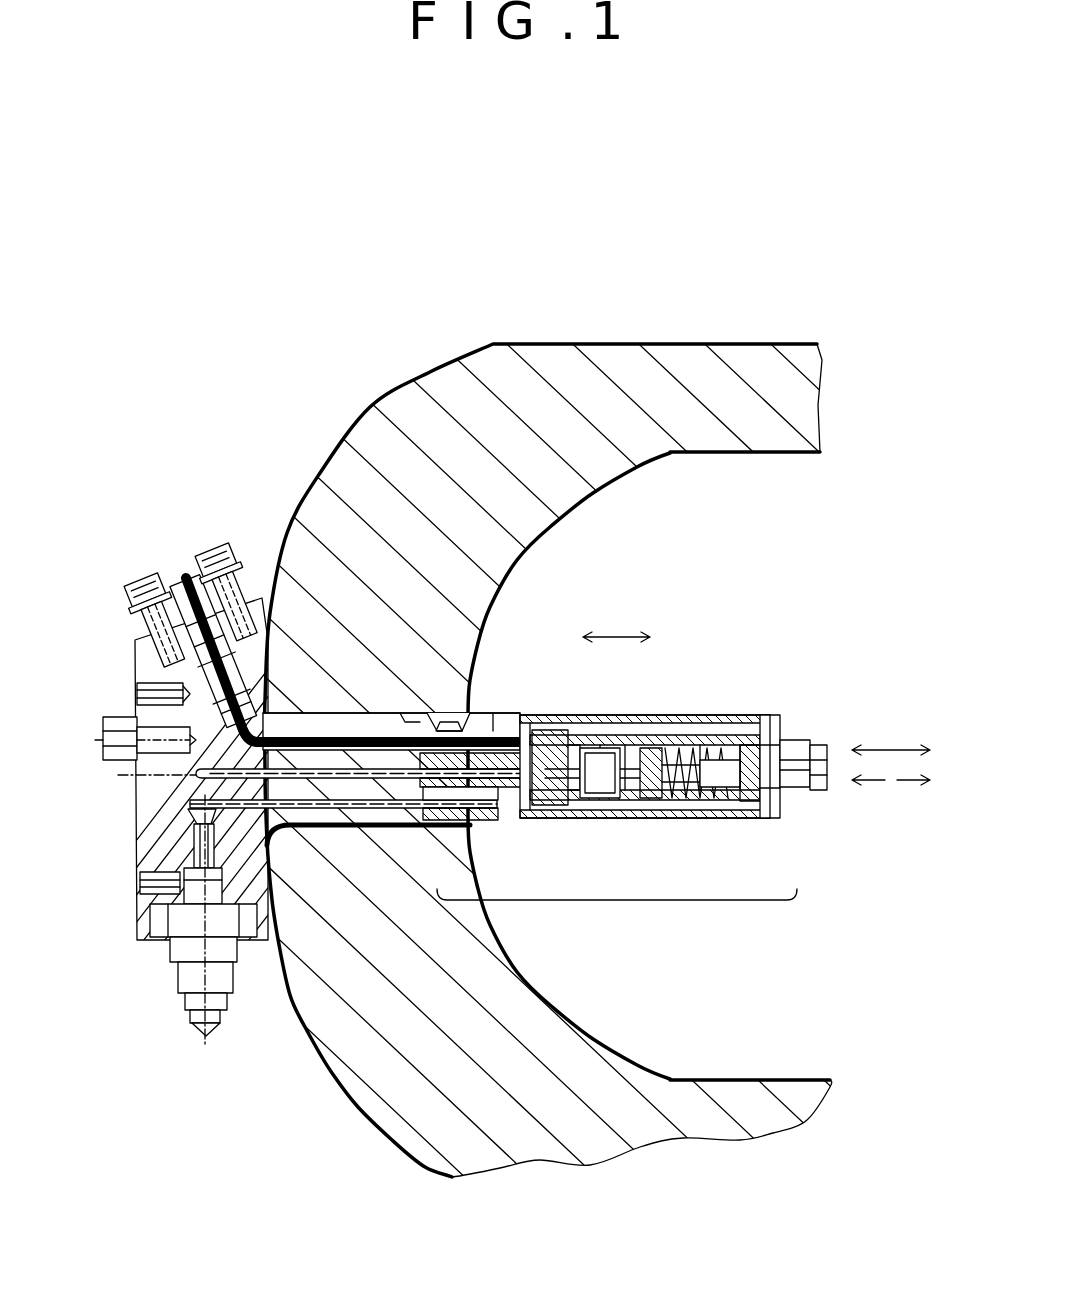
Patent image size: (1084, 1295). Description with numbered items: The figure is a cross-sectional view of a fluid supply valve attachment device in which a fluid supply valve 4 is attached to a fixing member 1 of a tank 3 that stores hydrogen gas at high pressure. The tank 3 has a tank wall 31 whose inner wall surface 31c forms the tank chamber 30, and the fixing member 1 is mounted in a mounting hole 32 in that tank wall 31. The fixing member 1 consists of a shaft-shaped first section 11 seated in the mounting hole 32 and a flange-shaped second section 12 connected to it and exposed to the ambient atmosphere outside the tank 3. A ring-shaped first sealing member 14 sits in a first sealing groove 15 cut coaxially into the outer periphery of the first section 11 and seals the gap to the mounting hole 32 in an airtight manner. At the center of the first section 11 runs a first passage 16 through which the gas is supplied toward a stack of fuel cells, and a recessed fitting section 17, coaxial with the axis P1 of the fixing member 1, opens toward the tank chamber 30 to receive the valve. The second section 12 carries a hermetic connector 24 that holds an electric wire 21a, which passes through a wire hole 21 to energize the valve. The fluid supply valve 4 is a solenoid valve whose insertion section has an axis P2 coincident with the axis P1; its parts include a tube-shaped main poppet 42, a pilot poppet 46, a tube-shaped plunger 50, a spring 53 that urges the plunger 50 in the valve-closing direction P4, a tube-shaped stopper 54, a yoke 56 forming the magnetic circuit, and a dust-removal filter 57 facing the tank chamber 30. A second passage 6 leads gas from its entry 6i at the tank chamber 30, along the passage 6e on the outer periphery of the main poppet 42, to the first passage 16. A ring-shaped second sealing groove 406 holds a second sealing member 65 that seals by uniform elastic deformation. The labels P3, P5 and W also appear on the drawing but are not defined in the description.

The fixing member 1 is at (340, 826).
The tank 3 is at (736, 454).
The fluid supply valve 4 is at (617, 914).
The second passage 6 is at (683, 779).
The passage 6e is at (598, 716).
The entry 6i is at (788, 720).
The first section 11 is at (368, 828).
The second section 12 is at (143, 845).
The first sealing member 14 is at (477, 712).
The first sealing groove 15 is at (447, 712).
The first passage 16 is at (285, 830).
The recessed fitting section 17 is at (495, 713).
The wire hole 21 is at (257, 601).
The electric wire 21a is at (303, 652).
The connector 24 is at (178, 566).
The tank chamber 30 is at (872, 564).
The tank wall 31 is at (477, 607).
The inner wall surface 31c is at (512, 568).
The mounting hole 32 is at (418, 712).
The main poppet 42 is at (642, 716).
The pilot poppet 46 is at (592, 818).
The plunger 50 is at (645, 818).
The spring 53 is at (668, 818).
The stopper 54 is at (745, 818).
The yoke 56 is at (705, 818).
The filter 57 is at (782, 790).
The second sealing member 65 is at (439, 712).
The second sealing groove 406 is at (420, 712).
The axis of the fixing member P1 is at (370, 730).
The axis of the protruded insertion section P2 is at (546, 718).
The direction P3 is at (905, 782).
The valve-closing direction P4 is at (875, 782).
The direction P5 is at (620, 636).
The wall W is at (217, 770).